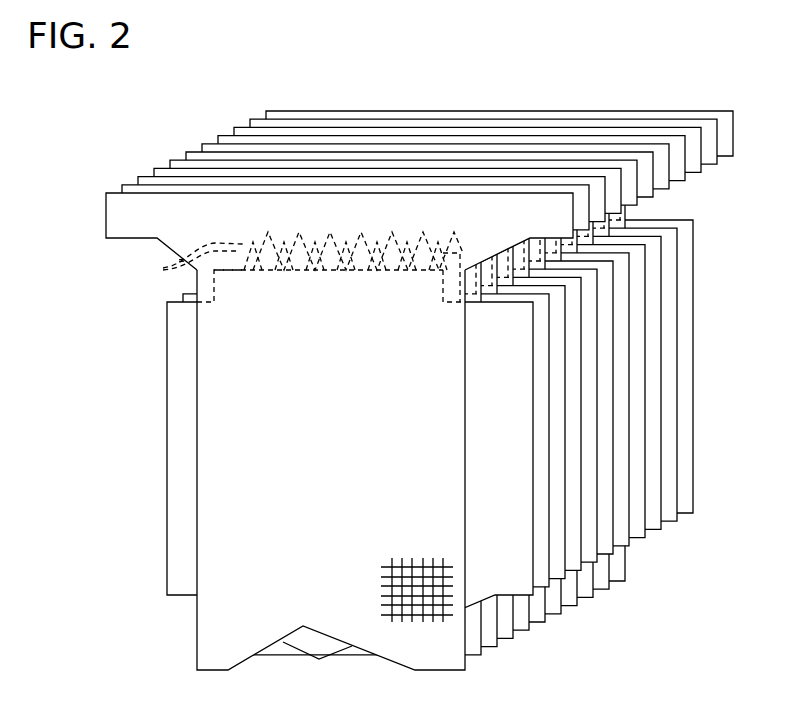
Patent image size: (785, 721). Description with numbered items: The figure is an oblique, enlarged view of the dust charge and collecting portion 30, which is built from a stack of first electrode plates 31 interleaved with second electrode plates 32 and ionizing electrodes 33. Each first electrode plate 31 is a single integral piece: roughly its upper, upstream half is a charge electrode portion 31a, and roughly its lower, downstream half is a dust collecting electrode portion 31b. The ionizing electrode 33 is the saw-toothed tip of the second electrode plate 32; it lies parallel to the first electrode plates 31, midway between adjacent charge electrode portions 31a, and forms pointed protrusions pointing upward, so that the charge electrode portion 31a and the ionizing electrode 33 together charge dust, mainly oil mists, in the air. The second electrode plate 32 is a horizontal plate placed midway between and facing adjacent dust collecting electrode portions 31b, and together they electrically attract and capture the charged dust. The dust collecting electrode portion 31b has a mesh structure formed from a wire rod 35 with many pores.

The dust charge and collecting portion 30 is at (381, 355).
The first electrode plate 31 is at (301, 398).
The charge electrode portion 31a is at (115, 213).
The dust collecting electrode portion 31b is at (212, 490).
The second electrode plate 32 is at (175, 402).
The ionizing electrode 33 is at (163, 268).
The wire rod 35 is at (403, 567).